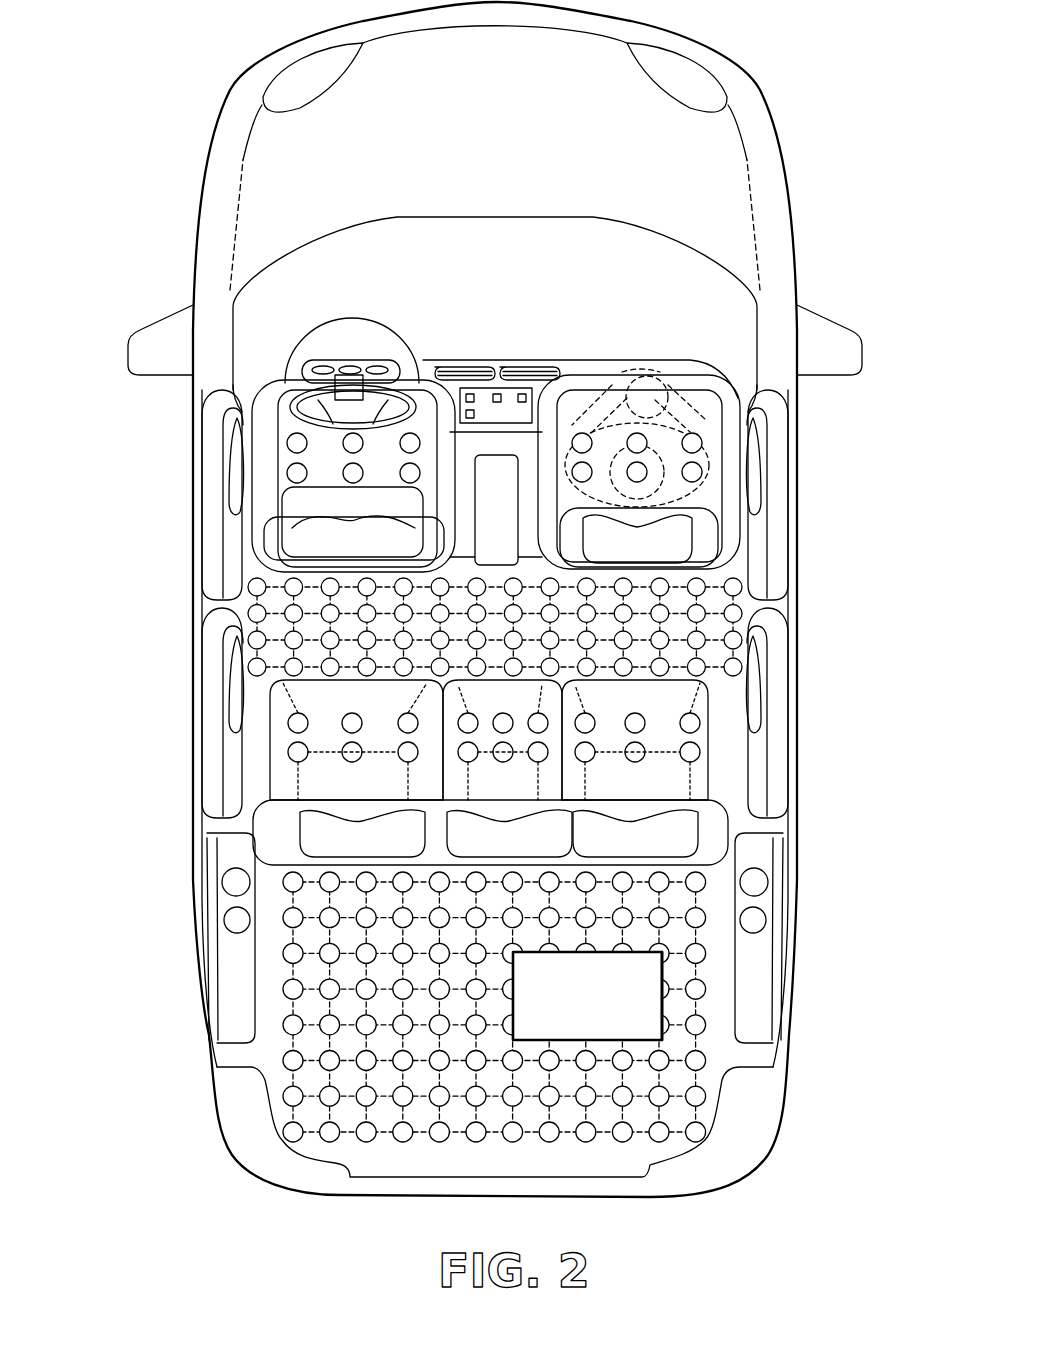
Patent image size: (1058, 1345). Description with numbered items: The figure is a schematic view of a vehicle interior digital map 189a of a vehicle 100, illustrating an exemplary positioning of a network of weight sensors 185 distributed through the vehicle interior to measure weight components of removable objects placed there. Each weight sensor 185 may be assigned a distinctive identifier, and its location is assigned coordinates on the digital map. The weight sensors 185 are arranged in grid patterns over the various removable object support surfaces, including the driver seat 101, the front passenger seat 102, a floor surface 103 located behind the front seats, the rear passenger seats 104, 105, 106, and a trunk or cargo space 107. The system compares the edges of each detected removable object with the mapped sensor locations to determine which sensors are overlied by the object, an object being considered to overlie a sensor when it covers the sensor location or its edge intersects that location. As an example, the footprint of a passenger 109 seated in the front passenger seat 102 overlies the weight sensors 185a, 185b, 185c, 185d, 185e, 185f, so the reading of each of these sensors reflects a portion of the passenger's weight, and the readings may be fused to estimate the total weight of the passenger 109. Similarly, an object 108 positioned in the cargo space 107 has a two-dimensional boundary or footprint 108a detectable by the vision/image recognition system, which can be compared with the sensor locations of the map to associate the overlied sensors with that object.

The vehicle 100 is at (802, 114).
The vehicle interior digital map 189a is at (108, 157).
The driver seat 101 is at (267, 450).
The front passenger seat 102 is at (727, 517).
The floor surface 103 is at (268, 624).
The rear passenger seat 104 is at (285, 773).
The rear passenger seat 105 is at (527, 698).
The rear passenger seat 106 is at (662, 700).
The trunk or cargo space 107 is at (277, 967).
The object 108 is at (598, 987).
The 2D boundary or footprint 108a is at (664, 972).
The passenger 109 is at (673, 380).
The weight sensors 185 is at (285, 912).
The weight sensor 185a is at (580, 433).
The weight sensor 185b is at (635, 433).
The weight sensor 185c is at (697, 434).
The weight sensor 185d is at (572, 476).
The weight sensor 185e is at (646, 479).
The weight sensor 185f is at (700, 467).